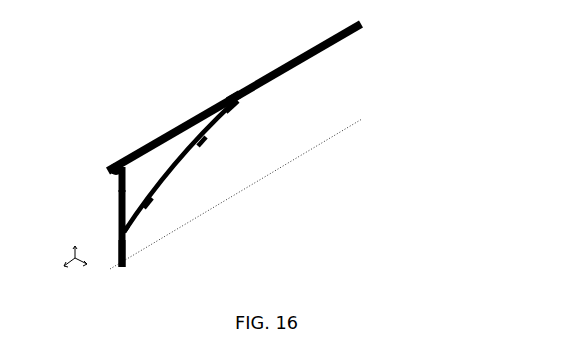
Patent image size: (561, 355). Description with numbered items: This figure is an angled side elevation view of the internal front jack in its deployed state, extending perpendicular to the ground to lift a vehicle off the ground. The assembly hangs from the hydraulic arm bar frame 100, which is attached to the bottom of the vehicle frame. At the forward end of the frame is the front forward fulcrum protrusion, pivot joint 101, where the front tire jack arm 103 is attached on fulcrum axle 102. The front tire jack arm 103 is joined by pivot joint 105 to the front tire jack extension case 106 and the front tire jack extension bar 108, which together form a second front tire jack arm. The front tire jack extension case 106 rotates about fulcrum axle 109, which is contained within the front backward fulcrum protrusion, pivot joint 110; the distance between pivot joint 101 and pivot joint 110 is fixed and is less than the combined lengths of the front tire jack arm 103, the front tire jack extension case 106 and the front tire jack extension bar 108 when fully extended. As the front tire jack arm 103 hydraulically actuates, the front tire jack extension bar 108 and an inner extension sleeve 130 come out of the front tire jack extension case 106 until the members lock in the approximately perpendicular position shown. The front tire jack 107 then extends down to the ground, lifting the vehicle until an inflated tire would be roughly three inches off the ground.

The hydraulic arm bar frame 100 is at (181, 124).
The pivot joint 101 is at (117, 163).
The fulcrum axle 102 is at (118, 180).
The front tire jack arm 103 is at (120, 211).
The pivot joint 105 is at (128, 231).
The front tire jack extension case 106 is at (204, 141).
The front tire jack 107 is at (126, 249).
The front tire jack extension bar 108 is at (148, 203).
The fulcrum axle 109 is at (232, 110).
The pivot joint 110 is at (232, 107).
The inner extension sleeve 130 is at (177, 172).